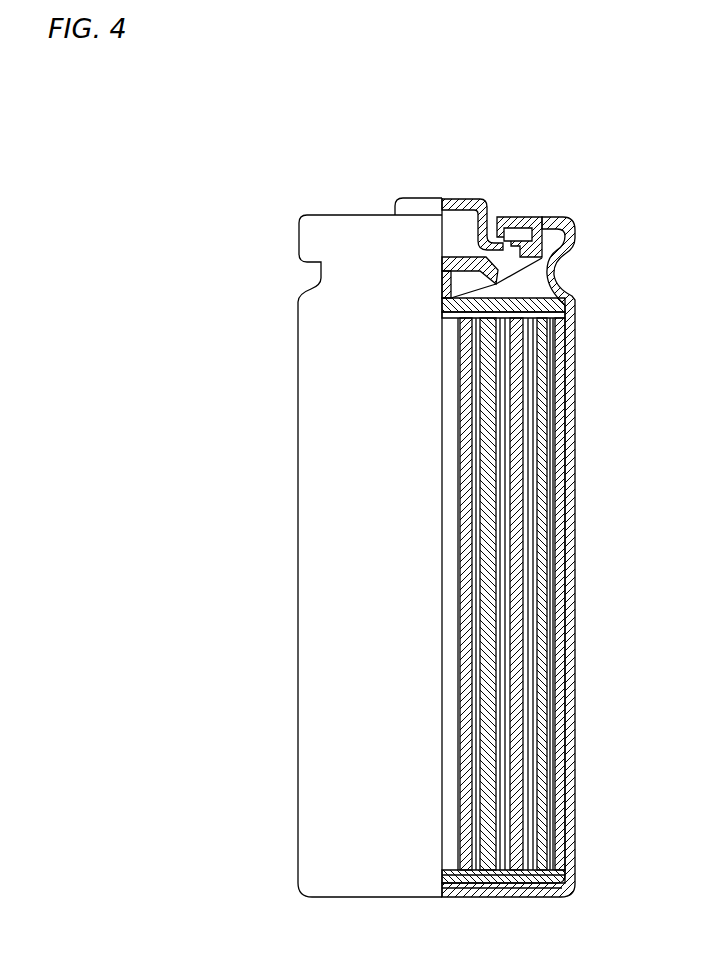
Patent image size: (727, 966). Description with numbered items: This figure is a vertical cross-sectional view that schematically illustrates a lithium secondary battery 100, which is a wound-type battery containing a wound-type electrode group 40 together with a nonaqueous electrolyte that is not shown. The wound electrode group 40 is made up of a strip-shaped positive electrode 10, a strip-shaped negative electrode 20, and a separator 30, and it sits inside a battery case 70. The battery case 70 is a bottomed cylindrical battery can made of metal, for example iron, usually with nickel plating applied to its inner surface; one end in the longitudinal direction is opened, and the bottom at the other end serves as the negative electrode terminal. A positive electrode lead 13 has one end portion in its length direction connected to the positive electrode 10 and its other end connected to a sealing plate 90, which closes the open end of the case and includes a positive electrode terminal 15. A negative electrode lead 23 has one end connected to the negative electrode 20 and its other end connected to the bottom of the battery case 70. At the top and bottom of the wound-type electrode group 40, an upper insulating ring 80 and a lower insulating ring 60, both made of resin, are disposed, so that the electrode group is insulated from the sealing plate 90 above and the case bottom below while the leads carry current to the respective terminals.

The lithium secondary battery 100 is at (412, 127).
The positive electrode terminal 15 is at (470, 200).
The sealing plate 90 is at (547, 214).
The positive electrode lead 13 is at (452, 291).
The upper insulating ring 80 is at (576, 303).
The negative electrode 20 is at (575, 428).
The separator 30 is at (560, 508).
The positive electrode 10 is at (567, 585).
The wound-type electrode group 40 is at (623, 403).
The battery case 70 is at (572, 676).
The lower insulating ring 60 is at (491, 898).
The negative electrode lead 23 is at (532, 898).